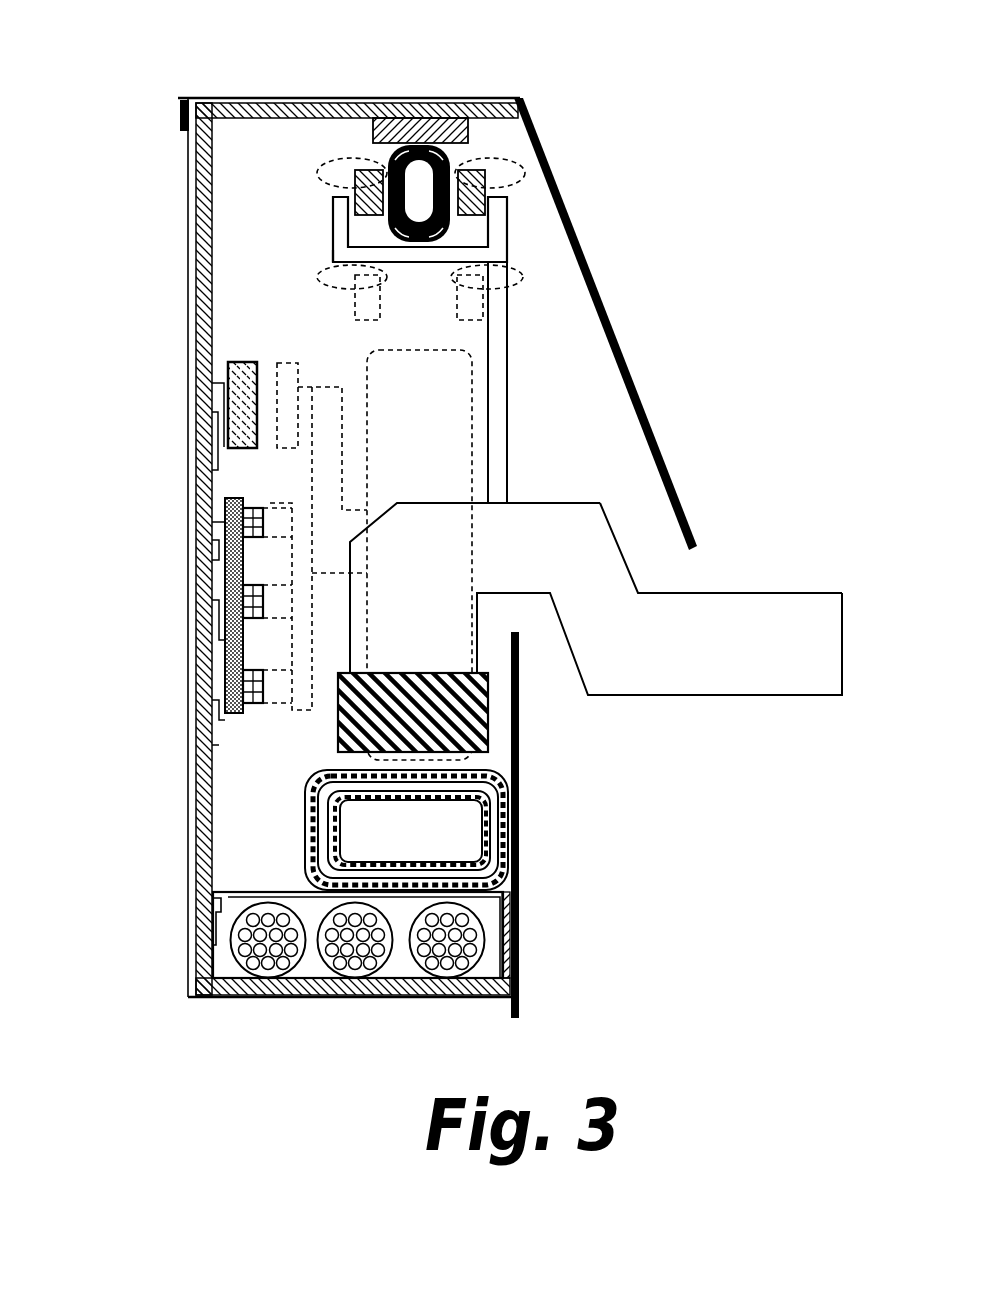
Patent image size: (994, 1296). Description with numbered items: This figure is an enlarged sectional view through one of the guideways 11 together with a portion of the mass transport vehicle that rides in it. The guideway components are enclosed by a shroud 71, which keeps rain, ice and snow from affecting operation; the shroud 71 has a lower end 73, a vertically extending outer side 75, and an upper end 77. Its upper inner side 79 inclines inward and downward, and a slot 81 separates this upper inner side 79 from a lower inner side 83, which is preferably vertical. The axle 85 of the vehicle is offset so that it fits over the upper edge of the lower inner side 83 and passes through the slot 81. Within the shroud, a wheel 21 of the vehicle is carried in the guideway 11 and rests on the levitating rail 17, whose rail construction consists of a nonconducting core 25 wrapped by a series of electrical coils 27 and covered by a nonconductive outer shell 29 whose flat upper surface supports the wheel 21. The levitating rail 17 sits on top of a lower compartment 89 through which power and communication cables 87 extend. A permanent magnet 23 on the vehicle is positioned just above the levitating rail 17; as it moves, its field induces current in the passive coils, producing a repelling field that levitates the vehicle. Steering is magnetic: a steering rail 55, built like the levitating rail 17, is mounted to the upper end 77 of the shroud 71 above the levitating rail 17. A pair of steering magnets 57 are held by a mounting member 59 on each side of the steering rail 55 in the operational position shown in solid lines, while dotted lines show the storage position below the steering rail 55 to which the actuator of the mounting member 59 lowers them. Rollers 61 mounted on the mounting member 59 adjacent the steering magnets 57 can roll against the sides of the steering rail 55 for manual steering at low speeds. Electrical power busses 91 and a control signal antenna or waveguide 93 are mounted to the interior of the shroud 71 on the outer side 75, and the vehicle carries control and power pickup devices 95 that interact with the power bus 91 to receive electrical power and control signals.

The guideway 11 is at (450, 552).
The levitating rail 17 is at (305, 840).
The wheel 21 is at (410, 448).
The permanent magnet 23 is at (490, 723).
The nonconducting core 25 is at (367, 798).
The electrical coil 27 is at (517, 880).
The outer shell 29 is at (353, 834).
The steering rail 55 is at (333, 233).
The steering magnet 57 is at (355, 180).
The mounting member 59 is at (508, 224).
The roller 61 is at (312, 168).
The shroud 71 is at (188, 385).
The lower end 73 is at (262, 995).
The outer side 75 is at (196, 473).
The upper end 77 is at (358, 98).
The upper inner side 79 is at (682, 480).
The slot 81 is at (680, 577).
The lower inner side 83 is at (520, 763).
The axle 85 is at (688, 700).
The power and communication cables 87 is at (233, 963).
The lower compartment 89 is at (248, 892).
The electrical power bus 91 is at (243, 665).
The control signal antenna or waveguide 93 is at (237, 362).
The control and power pickup device 95 is at (330, 383).